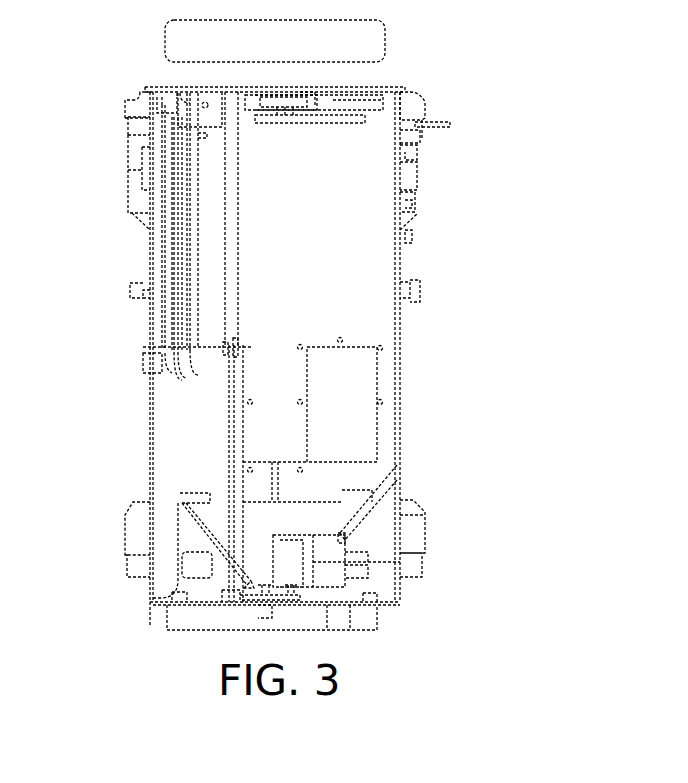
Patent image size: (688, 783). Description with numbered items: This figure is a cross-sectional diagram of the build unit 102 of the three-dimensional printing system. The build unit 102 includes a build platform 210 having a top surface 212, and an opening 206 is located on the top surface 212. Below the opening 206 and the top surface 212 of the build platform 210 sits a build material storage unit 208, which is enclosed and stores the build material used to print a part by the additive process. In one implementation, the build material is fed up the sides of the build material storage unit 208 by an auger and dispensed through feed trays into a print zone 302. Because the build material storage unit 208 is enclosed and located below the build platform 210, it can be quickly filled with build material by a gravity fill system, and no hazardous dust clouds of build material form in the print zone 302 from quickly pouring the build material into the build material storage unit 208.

The build unit 102 is at (473, 108).
The opening 206 is at (285, 95).
The build material storage unit 208 is at (373, 257).
The build platform 210 is at (147, 88).
The top surface 212 is at (387, 85).
The print zone 302 is at (387, 38).